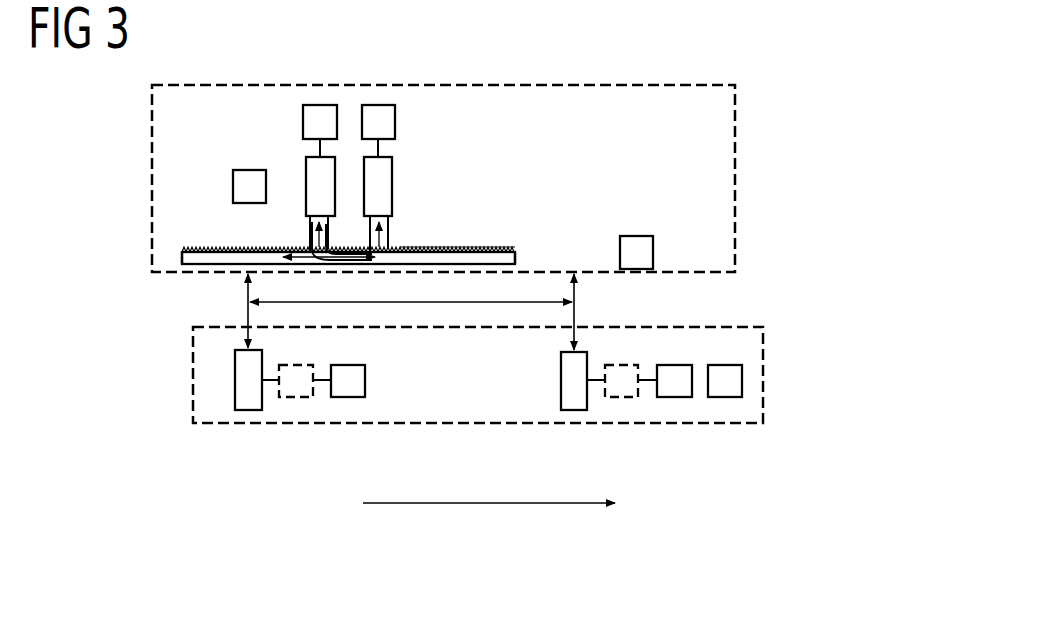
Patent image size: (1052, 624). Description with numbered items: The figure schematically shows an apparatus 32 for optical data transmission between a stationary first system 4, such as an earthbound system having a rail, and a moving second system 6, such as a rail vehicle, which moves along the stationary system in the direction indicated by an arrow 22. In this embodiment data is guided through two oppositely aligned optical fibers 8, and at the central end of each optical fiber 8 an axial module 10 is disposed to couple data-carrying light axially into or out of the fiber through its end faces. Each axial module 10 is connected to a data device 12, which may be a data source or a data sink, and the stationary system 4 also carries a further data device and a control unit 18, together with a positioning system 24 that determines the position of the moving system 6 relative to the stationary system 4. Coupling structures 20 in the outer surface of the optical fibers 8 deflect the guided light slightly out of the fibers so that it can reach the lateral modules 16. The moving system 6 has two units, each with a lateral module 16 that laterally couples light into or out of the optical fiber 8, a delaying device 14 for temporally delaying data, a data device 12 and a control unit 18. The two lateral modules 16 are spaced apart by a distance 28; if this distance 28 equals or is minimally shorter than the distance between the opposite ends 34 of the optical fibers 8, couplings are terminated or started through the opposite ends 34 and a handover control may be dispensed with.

The first system 4 is at (735, 180).
The second system 6 is at (193, 367).
The optical fiber 8 is at (222, 258).
The axial module 10 is at (306, 172).
The data device 12 is at (320, 105).
The delaying device 14 is at (292, 397).
The lateral module 16 is at (248, 410).
The control unit 18 is at (233, 185).
The coupling structures 20 is at (494, 247).
The arrow 22 is at (478, 505).
The positioning system 24 is at (633, 236).
The distance 28 is at (455, 304).
The apparatus 32 is at (790, 130).
The opposite ends 34 is at (182, 256).